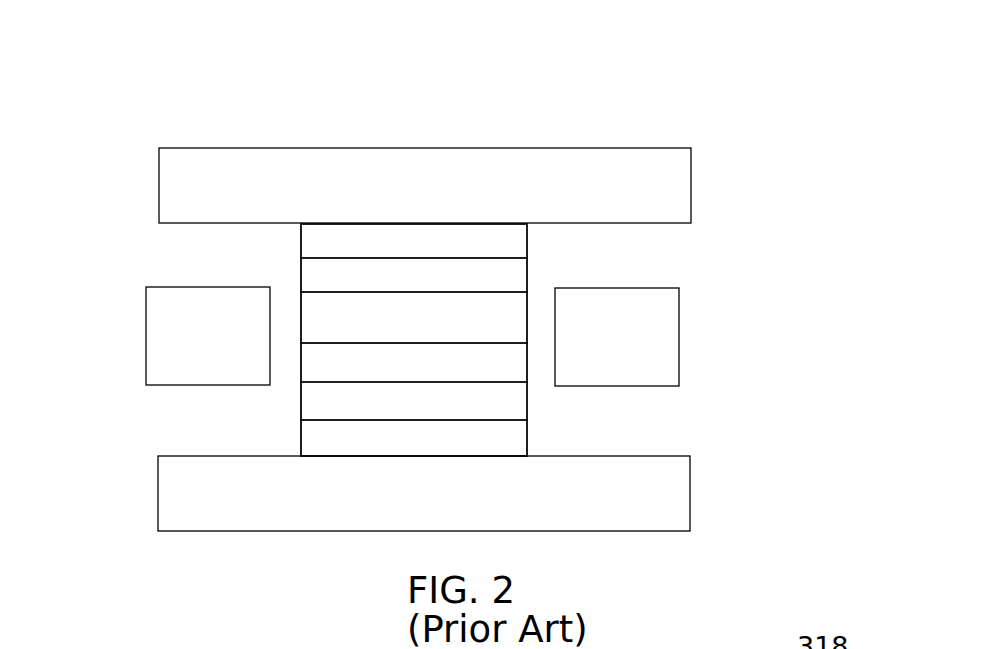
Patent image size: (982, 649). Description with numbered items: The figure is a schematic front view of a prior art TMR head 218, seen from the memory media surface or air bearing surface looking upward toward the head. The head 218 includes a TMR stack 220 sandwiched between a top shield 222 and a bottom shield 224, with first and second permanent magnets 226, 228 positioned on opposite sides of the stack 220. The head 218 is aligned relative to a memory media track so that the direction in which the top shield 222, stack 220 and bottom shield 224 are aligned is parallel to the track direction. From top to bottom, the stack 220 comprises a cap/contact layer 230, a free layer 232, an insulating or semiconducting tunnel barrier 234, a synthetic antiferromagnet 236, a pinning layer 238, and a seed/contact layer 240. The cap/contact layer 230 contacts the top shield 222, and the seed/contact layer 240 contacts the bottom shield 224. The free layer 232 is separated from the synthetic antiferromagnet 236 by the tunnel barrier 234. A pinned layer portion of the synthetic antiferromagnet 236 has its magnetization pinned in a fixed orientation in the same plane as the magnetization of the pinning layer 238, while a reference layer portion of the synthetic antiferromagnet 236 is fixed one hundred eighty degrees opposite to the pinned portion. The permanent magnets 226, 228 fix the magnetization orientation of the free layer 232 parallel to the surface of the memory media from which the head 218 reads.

The TMR head 218 is at (724, 108).
The TMR stack 220 is at (532, 321).
The top shield 222 is at (622, 160).
The bottom shield 224 is at (672, 489).
The first permanent magnet 226 is at (162, 320).
The second permanent magnet 228 is at (667, 320).
The cap/contact layer 230 is at (514, 245).
The free layer 232 is at (313, 274).
The tunnel barrier 234 is at (514, 307).
The synthetic antiferromagnet 236 is at (306, 357).
The pinning layer 238 is at (514, 401).
The seed/contact layer 240 is at (316, 439).